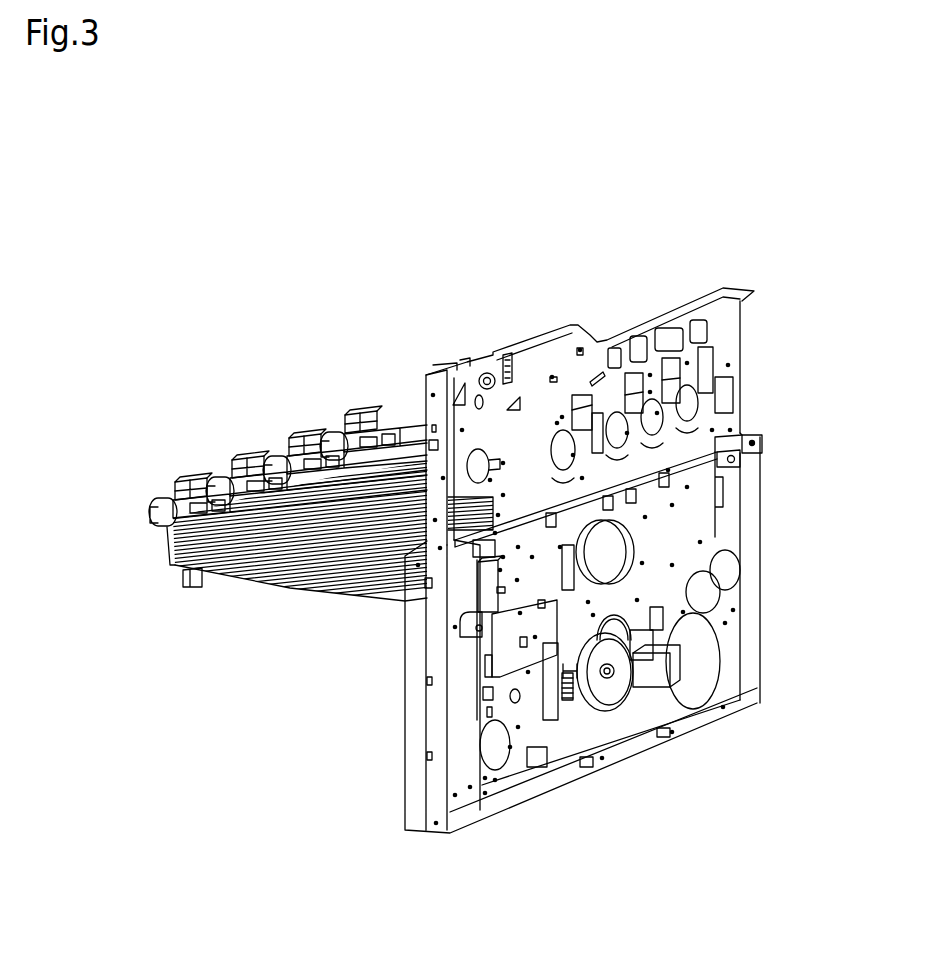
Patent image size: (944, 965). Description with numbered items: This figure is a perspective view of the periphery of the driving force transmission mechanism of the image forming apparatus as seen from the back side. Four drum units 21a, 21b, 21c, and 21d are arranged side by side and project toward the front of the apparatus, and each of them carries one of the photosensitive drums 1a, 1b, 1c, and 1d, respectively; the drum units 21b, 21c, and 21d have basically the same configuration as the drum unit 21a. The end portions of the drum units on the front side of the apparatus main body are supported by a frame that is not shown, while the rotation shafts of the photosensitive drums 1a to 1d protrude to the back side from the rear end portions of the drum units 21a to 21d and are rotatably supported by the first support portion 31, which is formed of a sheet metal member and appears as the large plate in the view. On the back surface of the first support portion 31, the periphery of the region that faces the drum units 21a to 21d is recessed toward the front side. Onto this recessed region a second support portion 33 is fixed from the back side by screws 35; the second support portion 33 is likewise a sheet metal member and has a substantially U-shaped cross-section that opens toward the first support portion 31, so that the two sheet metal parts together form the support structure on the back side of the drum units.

The photosensitive drum 1a is at (192, 477).
The photosensitive drum 1b is at (253, 458).
The photosensitive drum 1c is at (317, 435).
The photosensitive drum 1d is at (373, 417).
The drum unit 21a is at (176, 494).
The drum unit 21b is at (230, 477).
The drum unit 21c is at (290, 455).
The drum unit 21d is at (343, 432).
The first support portion 31 is at (727, 335).
The second support portion 33 is at (687, 505).
The screws 35 is at (738, 460).